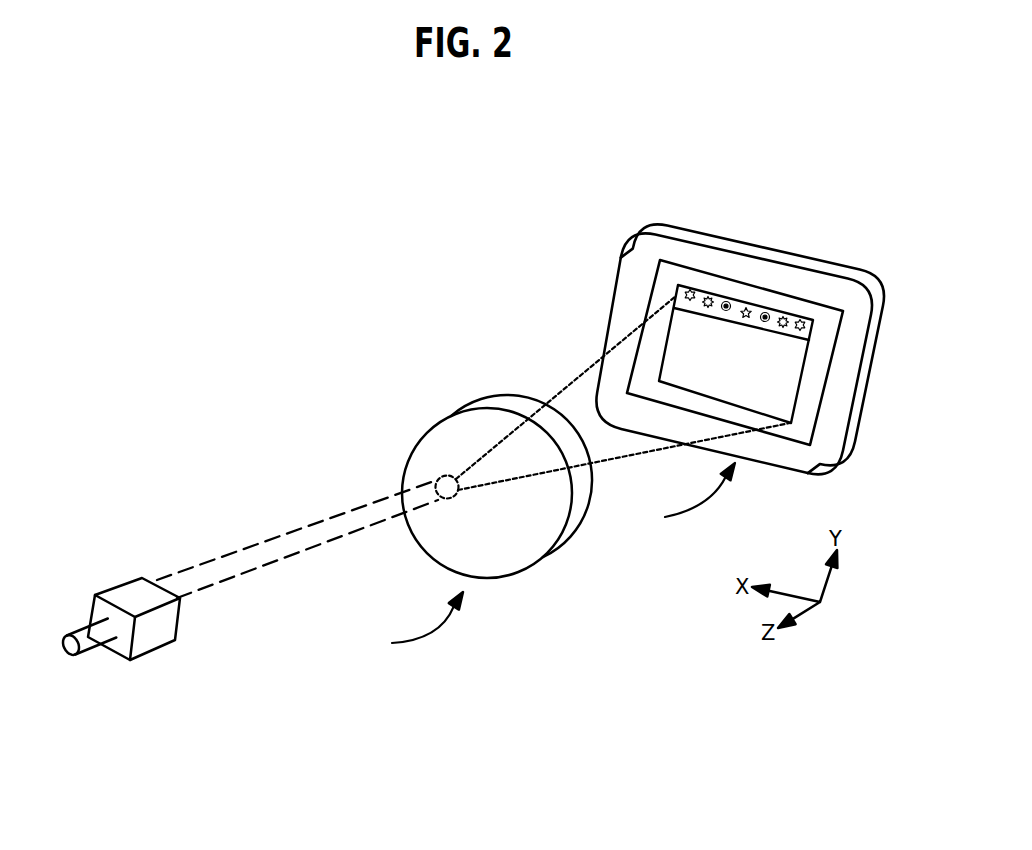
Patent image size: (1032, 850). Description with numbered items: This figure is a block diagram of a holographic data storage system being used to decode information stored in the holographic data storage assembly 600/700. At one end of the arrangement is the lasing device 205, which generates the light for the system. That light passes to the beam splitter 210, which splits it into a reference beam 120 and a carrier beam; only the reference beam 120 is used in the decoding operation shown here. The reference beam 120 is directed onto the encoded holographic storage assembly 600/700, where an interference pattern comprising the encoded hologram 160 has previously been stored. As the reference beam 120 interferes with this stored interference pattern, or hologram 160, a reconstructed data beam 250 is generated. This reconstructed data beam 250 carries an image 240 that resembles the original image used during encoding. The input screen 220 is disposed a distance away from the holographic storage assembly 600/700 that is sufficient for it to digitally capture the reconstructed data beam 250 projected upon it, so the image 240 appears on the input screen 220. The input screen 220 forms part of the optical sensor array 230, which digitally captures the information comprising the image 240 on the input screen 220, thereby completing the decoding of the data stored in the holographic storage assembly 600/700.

The reference beam 120 is at (277, 540).
The hologram 160 is at (445, 476).
The lasing device 205 is at (90, 643).
The beam splitter 210 is at (163, 618).
The input screen 220 is at (687, 232).
The optical sensor array 230 is at (681, 496).
The image 240 is at (752, 332).
The reconstructed data beam 250 is at (565, 398).
The holographic storage assembly 600 is at (450, 525).
The holographic storage assembly 700 is at (450, 525).